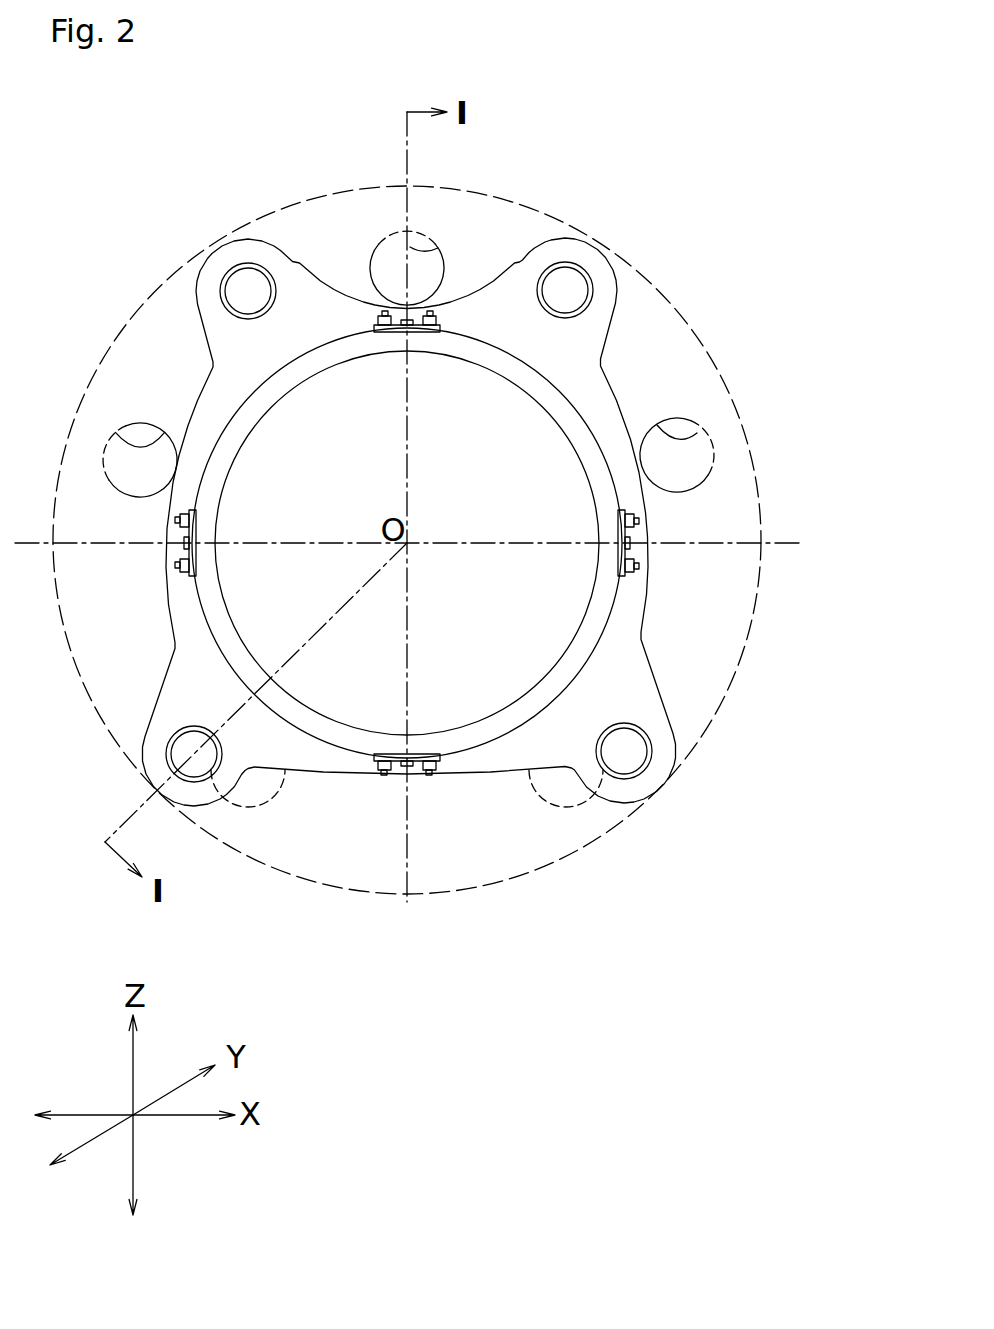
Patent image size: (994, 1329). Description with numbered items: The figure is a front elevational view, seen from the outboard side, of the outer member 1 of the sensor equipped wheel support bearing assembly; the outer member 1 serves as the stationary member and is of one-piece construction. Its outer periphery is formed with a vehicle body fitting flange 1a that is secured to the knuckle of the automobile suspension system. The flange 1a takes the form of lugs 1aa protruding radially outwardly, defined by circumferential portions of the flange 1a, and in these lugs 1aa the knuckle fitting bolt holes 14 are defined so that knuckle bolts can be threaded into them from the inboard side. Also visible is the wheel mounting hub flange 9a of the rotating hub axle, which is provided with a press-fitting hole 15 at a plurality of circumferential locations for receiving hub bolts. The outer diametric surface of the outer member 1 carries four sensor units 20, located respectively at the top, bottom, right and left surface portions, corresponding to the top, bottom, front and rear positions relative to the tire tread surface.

The outer member 1 is at (683, 333).
The vehicle body fitting flange 1a is at (668, 587).
The lugs 1aa is at (268, 242).
The wheel mounting hub flange 9a is at (140, 300).
The knuckle fitting bolt holes 14 is at (237, 308).
The press-fitting hole 15 is at (383, 222).
The sensor units 20 is at (433, 356).